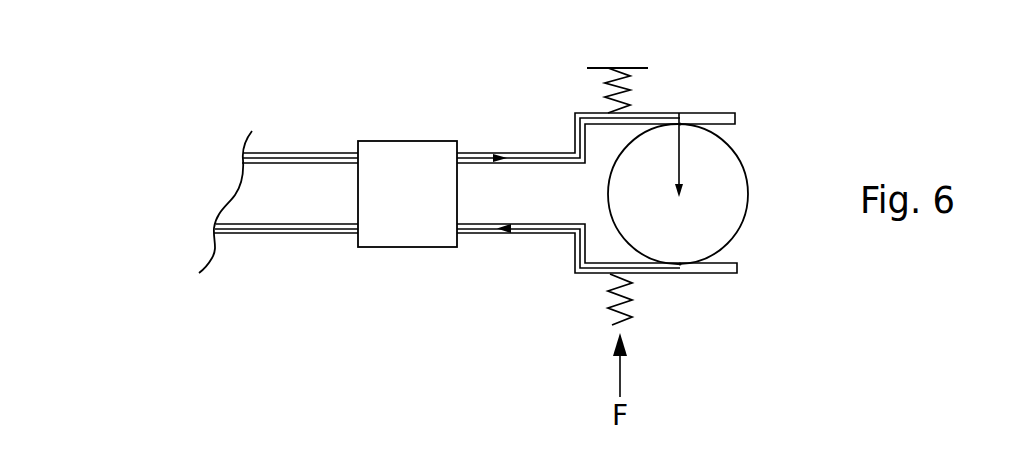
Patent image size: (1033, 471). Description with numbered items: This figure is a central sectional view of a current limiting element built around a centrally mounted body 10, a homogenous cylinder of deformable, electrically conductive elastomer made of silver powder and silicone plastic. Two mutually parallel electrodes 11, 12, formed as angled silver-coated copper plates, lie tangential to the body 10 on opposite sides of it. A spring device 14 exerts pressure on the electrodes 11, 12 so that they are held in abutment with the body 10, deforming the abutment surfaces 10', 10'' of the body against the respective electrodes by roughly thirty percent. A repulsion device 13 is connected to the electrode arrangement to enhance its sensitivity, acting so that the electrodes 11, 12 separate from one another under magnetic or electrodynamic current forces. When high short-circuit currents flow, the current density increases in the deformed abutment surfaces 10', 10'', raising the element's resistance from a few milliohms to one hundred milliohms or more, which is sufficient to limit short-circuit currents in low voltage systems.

The body 10 is at (694, 188).
The abutment surface 10' is at (703, 100).
The abutment surface 10'' is at (702, 291).
The electrode 11 is at (733, 114).
The electrode 12 is at (734, 274).
The repulsion device 13 is at (377, 238).
The spring device 14 is at (610, 296).